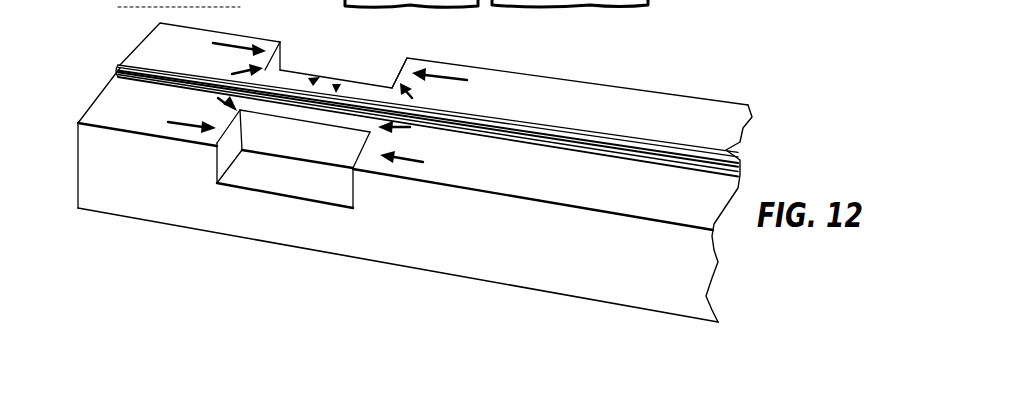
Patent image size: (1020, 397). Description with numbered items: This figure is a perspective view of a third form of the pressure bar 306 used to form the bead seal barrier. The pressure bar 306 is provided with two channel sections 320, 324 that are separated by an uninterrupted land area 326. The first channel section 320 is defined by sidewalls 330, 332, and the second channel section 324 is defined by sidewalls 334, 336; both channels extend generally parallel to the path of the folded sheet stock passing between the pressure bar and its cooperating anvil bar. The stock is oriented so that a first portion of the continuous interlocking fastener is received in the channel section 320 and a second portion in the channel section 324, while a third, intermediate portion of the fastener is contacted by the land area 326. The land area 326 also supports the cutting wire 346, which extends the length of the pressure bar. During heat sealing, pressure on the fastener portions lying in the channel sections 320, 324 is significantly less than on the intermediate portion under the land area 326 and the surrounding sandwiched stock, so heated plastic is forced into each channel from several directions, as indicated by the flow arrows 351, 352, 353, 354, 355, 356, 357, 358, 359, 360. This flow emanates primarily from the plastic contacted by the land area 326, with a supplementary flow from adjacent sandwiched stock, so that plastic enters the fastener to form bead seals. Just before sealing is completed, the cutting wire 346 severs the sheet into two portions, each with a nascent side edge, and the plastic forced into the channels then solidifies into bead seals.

The third pressure bar 306 is at (646, 108).
The channel section 320 is at (288, 186).
The channel section 324 is at (349, 52).
The land area 326 is at (337, 86).
The sidewall 330 is at (224, 160).
The sidewall 332 is at (351, 188).
The sidewall 334 is at (285, 53).
The sidewall 336 is at (404, 76).
The cutting wire 346 is at (122, 64).
The flow arrow 351 is at (233, 42).
The flow arrow 352 is at (245, 68).
The flow arrow 353 is at (312, 82).
The flow arrow 354 is at (448, 72).
The flow arrow 355 is at (412, 98).
The flow arrow 356 is at (402, 130).
The flow arrow 357 is at (407, 163).
The flow arrow 358 is at (306, 112).
The flow arrow 359 is at (218, 98).
The flow arrow 360 is at (175, 128).